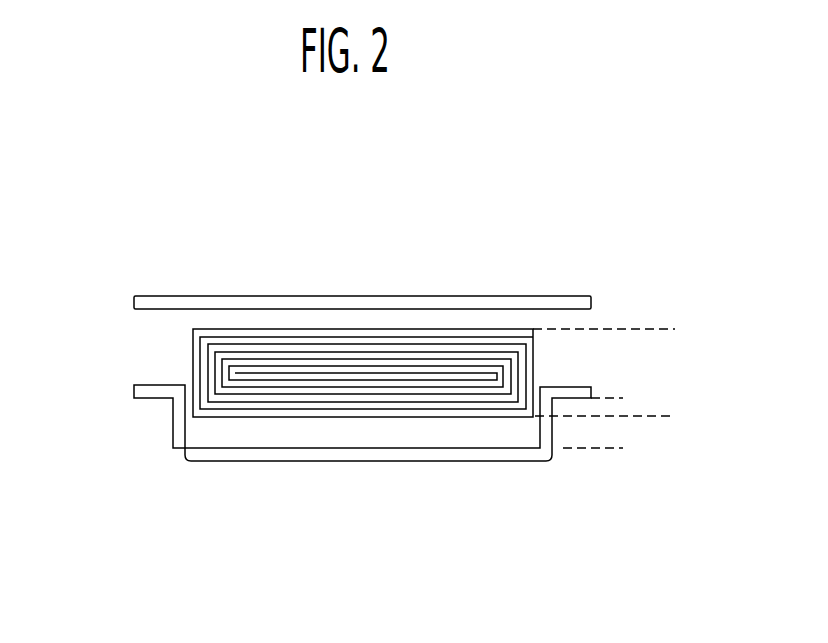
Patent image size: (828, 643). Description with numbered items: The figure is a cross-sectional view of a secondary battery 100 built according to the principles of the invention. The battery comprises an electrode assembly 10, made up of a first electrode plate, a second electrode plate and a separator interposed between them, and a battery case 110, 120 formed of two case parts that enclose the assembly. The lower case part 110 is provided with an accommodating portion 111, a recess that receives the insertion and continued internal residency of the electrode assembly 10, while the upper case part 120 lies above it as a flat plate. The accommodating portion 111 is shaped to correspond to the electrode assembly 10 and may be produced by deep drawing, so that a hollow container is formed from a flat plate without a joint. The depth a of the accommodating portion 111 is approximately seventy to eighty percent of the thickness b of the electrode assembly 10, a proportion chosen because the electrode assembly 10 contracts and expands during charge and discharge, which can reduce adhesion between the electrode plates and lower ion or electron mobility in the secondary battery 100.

The secondary battery 100 is at (577, 210).
The battery case 120 is at (158, 293).
The electrode assembly 10 is at (190, 353).
The battery case 110 is at (152, 400).
The accommodating portion 111 is at (383, 433).
The depth of accommodating portion a is at (612, 418).
The thickness of electrode assembly b is at (664, 331).